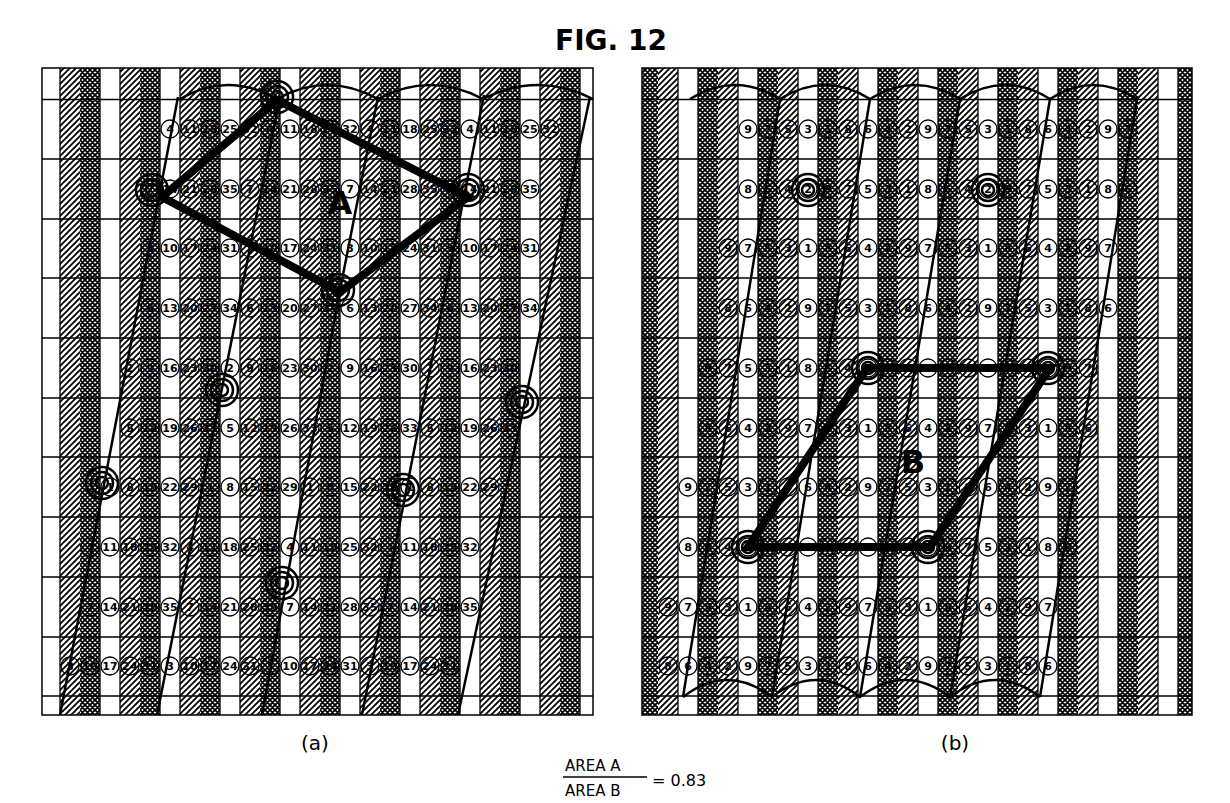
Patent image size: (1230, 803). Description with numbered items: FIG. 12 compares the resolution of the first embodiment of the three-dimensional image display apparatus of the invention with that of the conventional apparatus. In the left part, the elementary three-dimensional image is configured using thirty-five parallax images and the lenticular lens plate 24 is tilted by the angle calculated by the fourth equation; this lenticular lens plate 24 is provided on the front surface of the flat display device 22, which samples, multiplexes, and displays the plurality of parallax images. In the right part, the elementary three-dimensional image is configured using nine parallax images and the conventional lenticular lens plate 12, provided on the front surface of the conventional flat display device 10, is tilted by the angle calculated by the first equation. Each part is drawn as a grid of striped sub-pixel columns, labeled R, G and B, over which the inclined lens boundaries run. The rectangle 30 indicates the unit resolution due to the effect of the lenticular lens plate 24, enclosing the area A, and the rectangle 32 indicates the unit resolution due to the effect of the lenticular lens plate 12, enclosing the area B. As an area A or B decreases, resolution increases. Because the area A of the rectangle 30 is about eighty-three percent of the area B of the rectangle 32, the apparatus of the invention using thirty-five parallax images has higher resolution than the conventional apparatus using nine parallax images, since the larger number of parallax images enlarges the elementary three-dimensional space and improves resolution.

The flat display device 10 is at (808, 68).
The lenticular lens plate 12 is at (1112, 82).
The flat display device 22 is at (486, 97).
The lenticular lens plate 24 is at (356, 92).
The rectangle 30 is at (233, 92).
The rectangle 32 is at (845, 712).
The red sub-pixel column R is at (150, 70).
The green sub-pixel column G is at (172, 80).
The blue sub-pixel column B is at (192, 77).